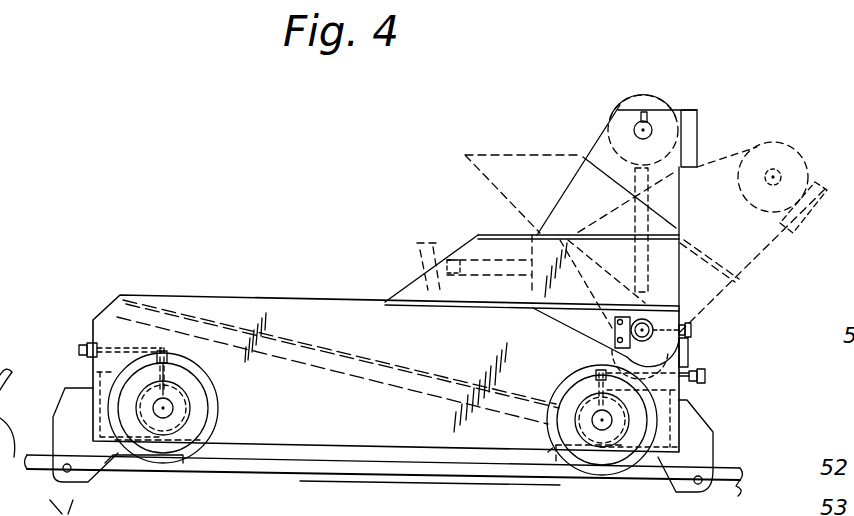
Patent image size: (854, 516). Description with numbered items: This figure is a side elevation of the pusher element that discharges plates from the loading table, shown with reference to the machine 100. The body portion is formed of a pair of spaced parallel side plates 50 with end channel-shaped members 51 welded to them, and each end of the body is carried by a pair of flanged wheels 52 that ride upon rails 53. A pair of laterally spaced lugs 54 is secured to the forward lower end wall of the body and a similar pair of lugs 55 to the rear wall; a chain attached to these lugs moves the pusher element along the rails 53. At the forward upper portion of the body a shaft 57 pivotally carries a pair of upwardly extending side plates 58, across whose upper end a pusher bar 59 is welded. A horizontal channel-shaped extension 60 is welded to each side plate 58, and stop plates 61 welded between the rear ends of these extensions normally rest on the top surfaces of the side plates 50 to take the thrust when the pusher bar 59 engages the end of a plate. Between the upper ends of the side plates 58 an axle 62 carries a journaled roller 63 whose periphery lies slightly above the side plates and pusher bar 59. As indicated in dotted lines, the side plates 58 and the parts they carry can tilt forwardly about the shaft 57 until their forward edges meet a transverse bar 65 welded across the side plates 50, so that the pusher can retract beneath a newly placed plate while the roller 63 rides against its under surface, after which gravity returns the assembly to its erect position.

The side plates 50 is at (334, 288).
The end channel-shaped members 51 is at (92, 382).
The flanged wheels 52 is at (184, 462).
The rails 53 is at (500, 473).
The lugs 54 is at (707, 443).
The lugs 55 is at (66, 392).
The shaft 57 is at (655, 322).
The side plates 58 is at (606, 148).
The pusher bar 59 is at (694, 135).
The channel-shaped extension 60 is at (558, 248).
The stop plates 61 is at (462, 260).
The axle 62 is at (650, 126).
The roller 63 is at (643, 100).
The transverse bar 65 is at (688, 358).
The machine 100 is at (324, 509).